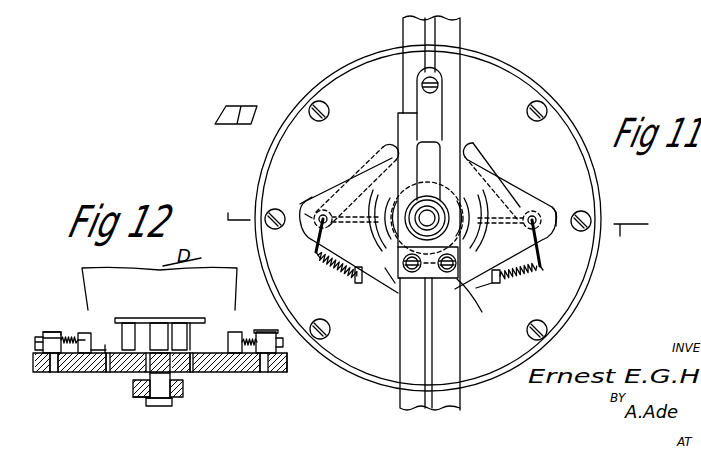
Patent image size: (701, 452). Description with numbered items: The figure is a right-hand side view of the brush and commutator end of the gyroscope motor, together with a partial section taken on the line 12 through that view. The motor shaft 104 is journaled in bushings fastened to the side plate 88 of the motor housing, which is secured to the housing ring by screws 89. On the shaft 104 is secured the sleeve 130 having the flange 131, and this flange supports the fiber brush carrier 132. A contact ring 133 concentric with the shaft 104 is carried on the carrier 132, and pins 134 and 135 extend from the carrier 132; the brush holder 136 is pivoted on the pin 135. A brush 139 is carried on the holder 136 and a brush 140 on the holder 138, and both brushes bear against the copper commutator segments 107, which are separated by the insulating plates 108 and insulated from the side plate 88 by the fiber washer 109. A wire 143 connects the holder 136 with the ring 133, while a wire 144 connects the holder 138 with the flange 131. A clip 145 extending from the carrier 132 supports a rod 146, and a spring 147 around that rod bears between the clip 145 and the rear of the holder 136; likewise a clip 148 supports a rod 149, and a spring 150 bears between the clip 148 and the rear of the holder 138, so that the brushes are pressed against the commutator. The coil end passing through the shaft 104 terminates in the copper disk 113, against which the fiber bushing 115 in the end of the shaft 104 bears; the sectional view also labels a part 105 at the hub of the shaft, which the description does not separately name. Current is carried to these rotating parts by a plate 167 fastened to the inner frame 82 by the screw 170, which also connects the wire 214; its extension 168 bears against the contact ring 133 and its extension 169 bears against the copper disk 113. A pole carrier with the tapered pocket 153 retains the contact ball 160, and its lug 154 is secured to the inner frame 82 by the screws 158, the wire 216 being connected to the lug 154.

In FIG. 11, the section line 12 12 is at (431, 225).
In FIG. 11, the inner frame 82 is at (557, 350).
In FIG. 12, the inner frame 82 is at (140, 398).
In FIG. 11, the side plate 88 is at (564, 199).
In FIG. 11, the screws 89 is at (318, 100).
In FIG. 12, the shaft 104 is at (158, 385).
In FIG. 12, the hub 105 is at (160, 363).
In FIG. 12, the copper segments 107 is at (160, 332).
In FIG. 12, the insulating plates 108 is at (174, 332).
In FIG. 12, the fiber washer 109 is at (128, 322).
In FIG. 12, the copper disk 113 is at (158, 406).
In FIG. 12, the fiber bushing 115 is at (175, 400).
In FIG. 12, the sleeve 130 is at (183, 373).
In FIG. 11, the flange 131 is at (477, 307).
In FIG. 12, the flange 131 is at (131, 374).
In FIG. 11, the fiber brush carrier 132 is at (328, 200).
In FIG. 12, the fiber brush carrier 132 is at (81, 372).
In FIG. 11, the contact ring 133 is at (393, 276).
In FIG. 12, the contact ring 133 is at (218, 374).
In FIG. 11, the pin 134 is at (312, 215).
In FIG. 12, the pin 134 is at (55, 358).
In FIG. 11, the pin 135 is at (560, 214).
In FIG. 12, the pin 135 is at (266, 373).
In FIG. 11, the brush holder 136 is at (345, 195).
In FIG. 12, the brush holder 136 is at (55, 322).
In FIG. 11, the brush holder 138 is at (535, 214).
In FIG. 12, the brush holder 138 is at (264, 332).
In FIG. 11, the brush 139 is at (380, 156).
In FIG. 11, the brush 140 is at (508, 151).
In FIG. 11, the wire 143 is at (346, 228).
In FIG. 12, the wire 143 is at (104, 344).
In FIG. 11, the wire 144 is at (507, 228).
In FIG. 12, the wire 144 is at (228, 352).
In FIG. 11, the clip 145 is at (350, 282).
In FIG. 12, the clip 145 is at (81, 337).
In FIG. 11, the rod 146 is at (312, 257).
In FIG. 12, the rod 146 is at (36, 337).
In FIG. 11, the spring 147 is at (328, 270).
In FIG. 12, the spring 147 is at (77, 343).
In FIG. 11, the clip 148 is at (497, 287).
In FIG. 12, the clip 148 is at (230, 334).
In FIG. 11, the rod 149 is at (543, 266).
In FIG. 12, the rod 149 is at (290, 370).
In FIG. 11, the spring 150 is at (525, 283).
In FIG. 12, the spring 150 is at (244, 333).
In FIG. 11, the tapered pocket 153 is at (437, 203).
In FIG. 11, the lug 154 is at (446, 280).
In FIG. 11, the screws 158 is at (411, 280).
In FIG. 11, the contact ball 160 is at (427, 218).
In FIG. 11, the plate 167 is at (438, 102).
In FIG. 11, the extension 168 is at (393, 122).
In FIG. 11, the extension 169 is at (428, 171).
In FIG. 11, the screw 170 is at (438, 82).
In FIG. 11, the wire 214 is at (422, 35).
In FIG. 11, the wire 216 is at (525, 385).